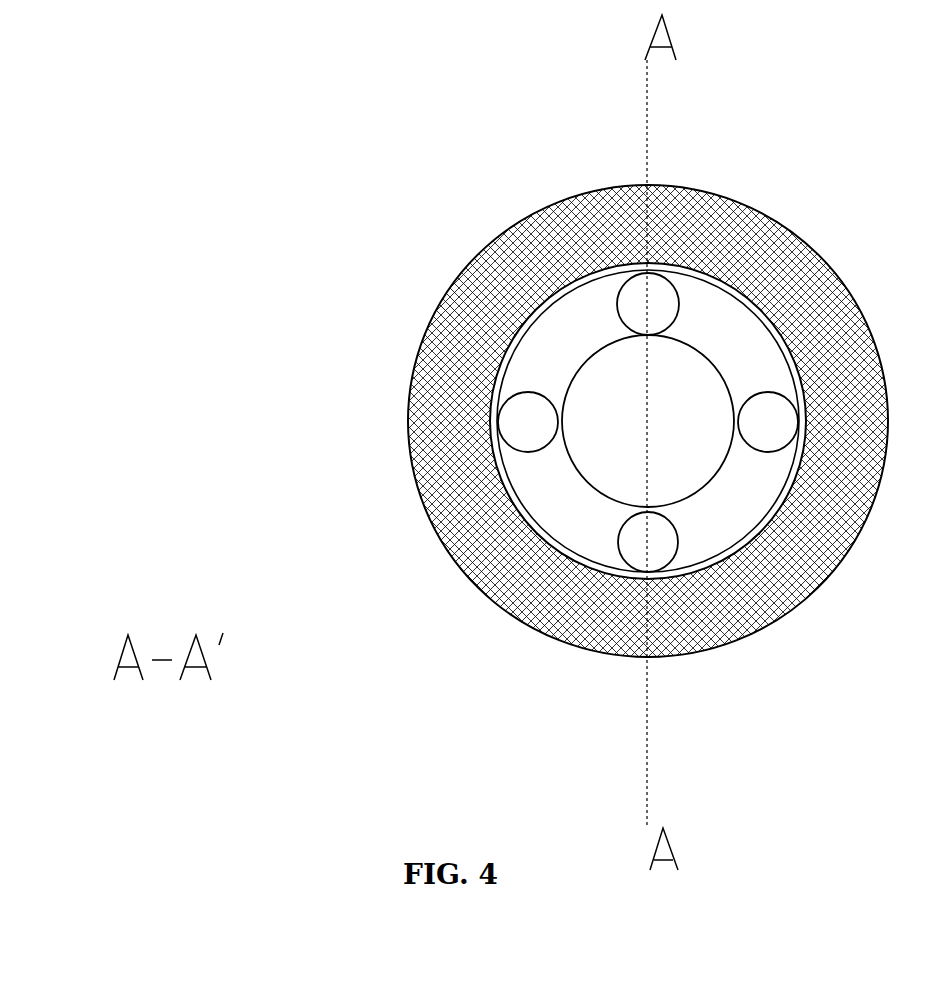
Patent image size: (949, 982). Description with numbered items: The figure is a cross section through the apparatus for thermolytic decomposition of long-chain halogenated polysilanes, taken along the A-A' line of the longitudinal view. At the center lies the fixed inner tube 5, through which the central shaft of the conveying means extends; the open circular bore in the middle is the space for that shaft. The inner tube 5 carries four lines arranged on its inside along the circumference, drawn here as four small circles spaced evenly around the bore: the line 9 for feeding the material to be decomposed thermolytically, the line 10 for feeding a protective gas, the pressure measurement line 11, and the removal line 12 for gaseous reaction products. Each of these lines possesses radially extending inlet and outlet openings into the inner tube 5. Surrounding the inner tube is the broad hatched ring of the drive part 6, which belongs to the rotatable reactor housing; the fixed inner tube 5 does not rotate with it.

The inner tube 5 is at (500, 360).
The drive part 6 is at (522, 238).
The line for feeding the material to be decomposed 9 is at (782, 412).
The line for feeding a protective gas 10 is at (503, 432).
The pressure measurement line 11 is at (662, 293).
The removal line 12 is at (665, 557).